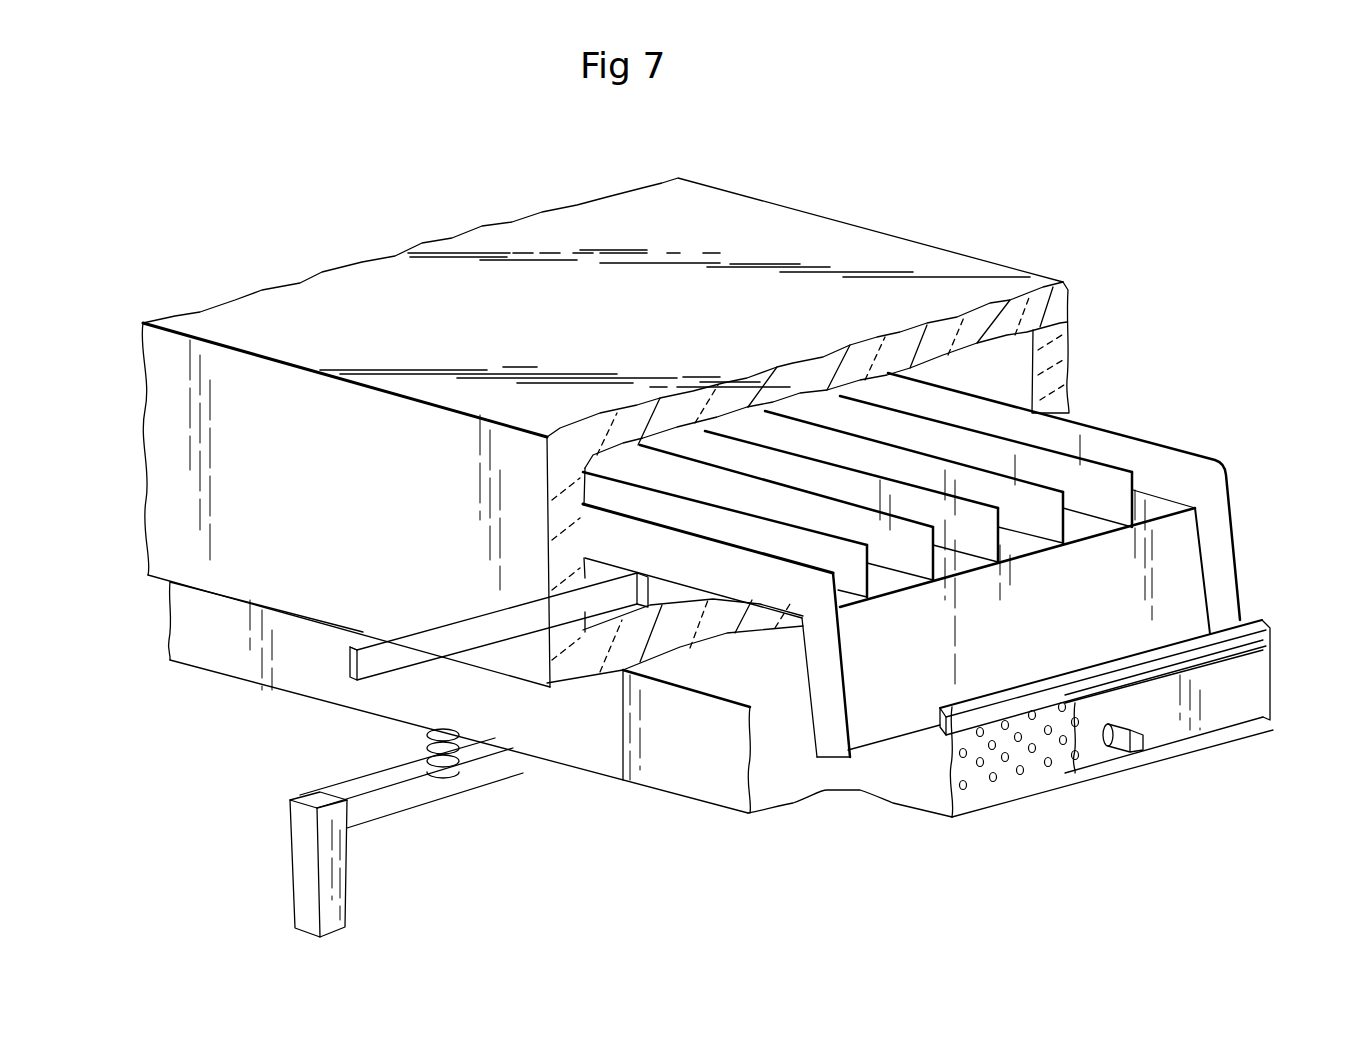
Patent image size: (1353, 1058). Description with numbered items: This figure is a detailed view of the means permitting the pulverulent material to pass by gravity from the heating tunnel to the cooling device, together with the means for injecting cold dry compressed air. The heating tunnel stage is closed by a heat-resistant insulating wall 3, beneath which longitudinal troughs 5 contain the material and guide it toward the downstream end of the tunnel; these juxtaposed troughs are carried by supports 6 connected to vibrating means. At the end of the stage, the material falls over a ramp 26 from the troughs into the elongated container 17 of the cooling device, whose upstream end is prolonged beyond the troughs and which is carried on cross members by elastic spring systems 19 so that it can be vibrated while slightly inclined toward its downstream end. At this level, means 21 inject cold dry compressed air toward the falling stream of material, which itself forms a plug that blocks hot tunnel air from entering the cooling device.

The insulating wall 3 is at (800, 233).
The longitudinal trough 5 is at (1030, 462).
The support 6 is at (427, 640).
The ramp 26 is at (1188, 585).
The container 17 is at (693, 773).
The spring system 19 is at (420, 752).
The means for the injection of cold dry compressed air 21 is at (1123, 747).